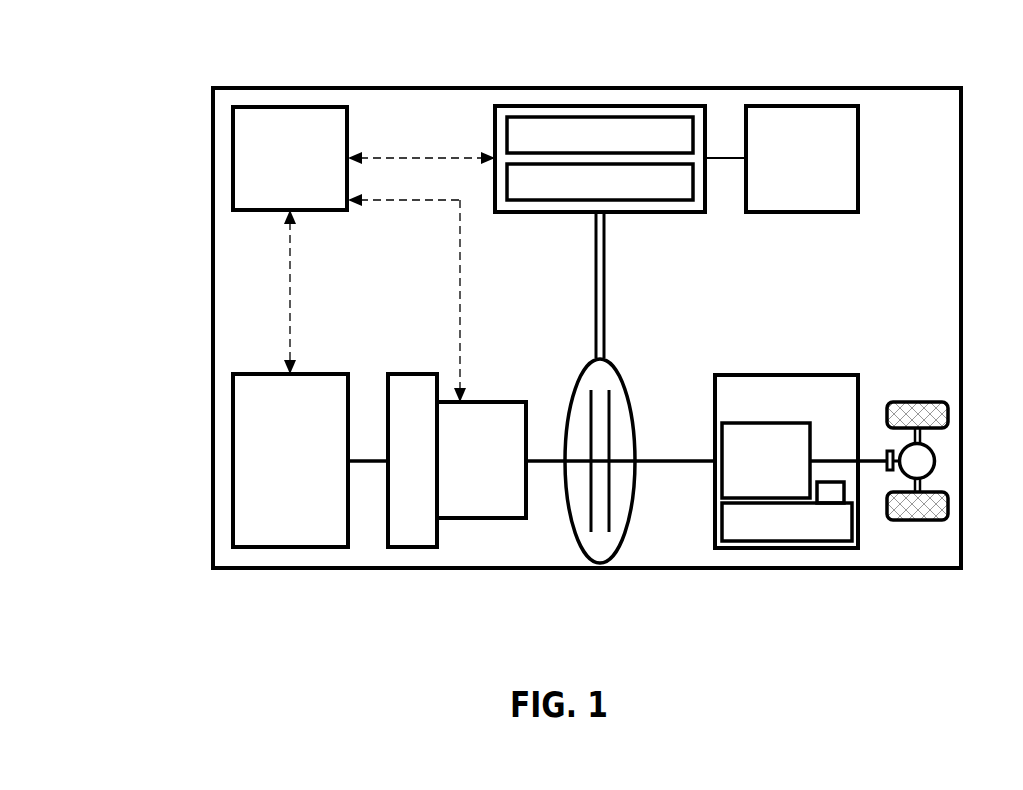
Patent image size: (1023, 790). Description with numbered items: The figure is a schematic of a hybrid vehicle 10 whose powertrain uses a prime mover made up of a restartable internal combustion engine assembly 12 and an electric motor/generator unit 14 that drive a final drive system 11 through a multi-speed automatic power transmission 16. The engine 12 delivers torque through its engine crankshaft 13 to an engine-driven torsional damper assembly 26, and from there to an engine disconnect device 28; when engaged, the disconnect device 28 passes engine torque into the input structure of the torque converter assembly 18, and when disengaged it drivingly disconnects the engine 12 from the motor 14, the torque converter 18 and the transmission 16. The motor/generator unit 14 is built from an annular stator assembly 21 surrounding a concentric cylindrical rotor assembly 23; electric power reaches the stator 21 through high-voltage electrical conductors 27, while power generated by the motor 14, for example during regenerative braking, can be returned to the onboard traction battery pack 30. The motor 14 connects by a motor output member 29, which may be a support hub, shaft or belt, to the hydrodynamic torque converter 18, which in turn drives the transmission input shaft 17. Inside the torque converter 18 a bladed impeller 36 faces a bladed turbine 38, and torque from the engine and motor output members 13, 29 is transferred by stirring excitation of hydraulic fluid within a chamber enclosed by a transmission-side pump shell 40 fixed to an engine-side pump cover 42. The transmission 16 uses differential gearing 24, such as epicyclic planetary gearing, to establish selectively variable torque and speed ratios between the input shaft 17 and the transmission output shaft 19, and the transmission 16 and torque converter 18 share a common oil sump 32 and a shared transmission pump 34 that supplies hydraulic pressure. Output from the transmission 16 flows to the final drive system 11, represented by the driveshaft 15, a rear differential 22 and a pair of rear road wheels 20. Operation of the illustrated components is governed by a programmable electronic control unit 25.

The hybrid vehicle 10 is at (203, 67).
The final drive system 11 is at (940, 280).
The internal combustion engine assembly 12 is at (244, 374).
The engine crankshaft 13 is at (367, 460).
The electric motor/generator unit 14 is at (509, 106).
The driveshaft 15 is at (876, 458).
The multi-speed automatic power transmission 16 is at (723, 375).
The transmission input shaft 17 is at (670, 458).
The torque converter assembly 18 is at (630, 518).
The transmission output shaft 19 is at (826, 458).
The rear road wheels 20 is at (913, 402).
The annular stator assembly 21 is at (507, 125).
The rear differential 22 is at (937, 456).
The cylindrical rotor assembly 23 is at (507, 173).
The differential gearing 24 is at (764, 423).
The programmable electronic control unit 25 is at (240, 107).
The torsional damper assembly 26 is at (427, 374).
The electrical conductors/cables 27 is at (714, 158).
The engine disconnect device 28 is at (500, 402).
The motor output member 29 is at (596, 240).
The traction battery pack 30 is at (770, 106).
The transmission oil sump 32 is at (763, 522).
The transmission pump 34 is at (827, 492).
The bladed impeller 36 is at (588, 528).
The bladed turbine 38 is at (614, 528).
The transmission-side pump shell 40 is at (634, 492).
The engine-side pump cover 42 is at (576, 526).